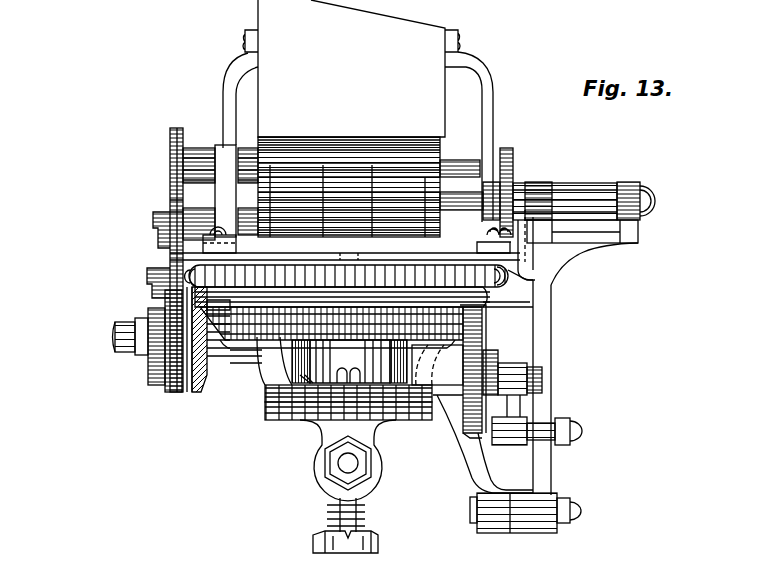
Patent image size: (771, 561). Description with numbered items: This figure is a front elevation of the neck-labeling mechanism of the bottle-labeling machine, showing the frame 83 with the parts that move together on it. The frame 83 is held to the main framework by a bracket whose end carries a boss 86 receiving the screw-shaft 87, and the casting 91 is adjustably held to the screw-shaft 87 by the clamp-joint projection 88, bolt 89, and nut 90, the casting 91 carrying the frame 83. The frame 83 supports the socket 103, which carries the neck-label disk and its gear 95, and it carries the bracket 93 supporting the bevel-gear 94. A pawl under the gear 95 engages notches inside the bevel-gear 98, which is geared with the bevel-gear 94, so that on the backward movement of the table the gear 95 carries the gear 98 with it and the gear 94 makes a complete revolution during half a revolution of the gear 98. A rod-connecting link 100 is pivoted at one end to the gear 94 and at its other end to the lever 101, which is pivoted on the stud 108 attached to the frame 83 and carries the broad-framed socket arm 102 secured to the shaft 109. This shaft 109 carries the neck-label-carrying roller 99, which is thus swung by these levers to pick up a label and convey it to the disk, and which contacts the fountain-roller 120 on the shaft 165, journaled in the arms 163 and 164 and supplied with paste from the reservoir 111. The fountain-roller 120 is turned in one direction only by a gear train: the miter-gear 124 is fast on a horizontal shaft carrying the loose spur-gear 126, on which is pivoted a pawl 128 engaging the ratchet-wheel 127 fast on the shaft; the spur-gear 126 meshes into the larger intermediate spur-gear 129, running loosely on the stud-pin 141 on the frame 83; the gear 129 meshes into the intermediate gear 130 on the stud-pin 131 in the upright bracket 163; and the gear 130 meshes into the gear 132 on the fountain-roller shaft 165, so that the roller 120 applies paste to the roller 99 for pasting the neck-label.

The reservoir 111 is at (258, 13).
The arm 163 is at (236, 62).
The arm 164 is at (491, 123).
The fountain-roller 120 is at (267, 153).
The label-carrying roller 99 is at (230, 167).
The gear 132 is at (170, 132).
The intermediate gear 130 is at (170, 205).
The stud-pin 131 is at (153, 219).
The stud-pin 141 is at (147, 277).
The intermediate spur-gear 129 is at (170, 254).
The ratchet-wheel 127 is at (148, 362).
The pawl 128 is at (158, 378).
The spur-gear 126 is at (174, 394).
The miter-gear 124 is at (198, 394).
The gear 95 is at (500, 292).
The bevel-gear 94 is at (483, 333).
The bevel-gear 98 is at (483, 312).
The bracket 93 is at (440, 392).
The socket 103 is at (318, 368).
The framework 83 is at (265, 393).
The casting 91 is at (265, 413).
The clamp-joint projection 88 is at (372, 483).
The nut 90 is at (336, 479).
The bolt 89 is at (343, 465).
The screw-shaft 87 is at (330, 519).
The boss 86 is at (372, 545).
The lever 101 is at (543, 353).
The rod-connecting link 100 is at (518, 406).
The stud 108 is at (565, 510).
The shaft 109 is at (588, 198).
The shaft 165 is at (482, 170).
The socket arm 102 is at (638, 232).